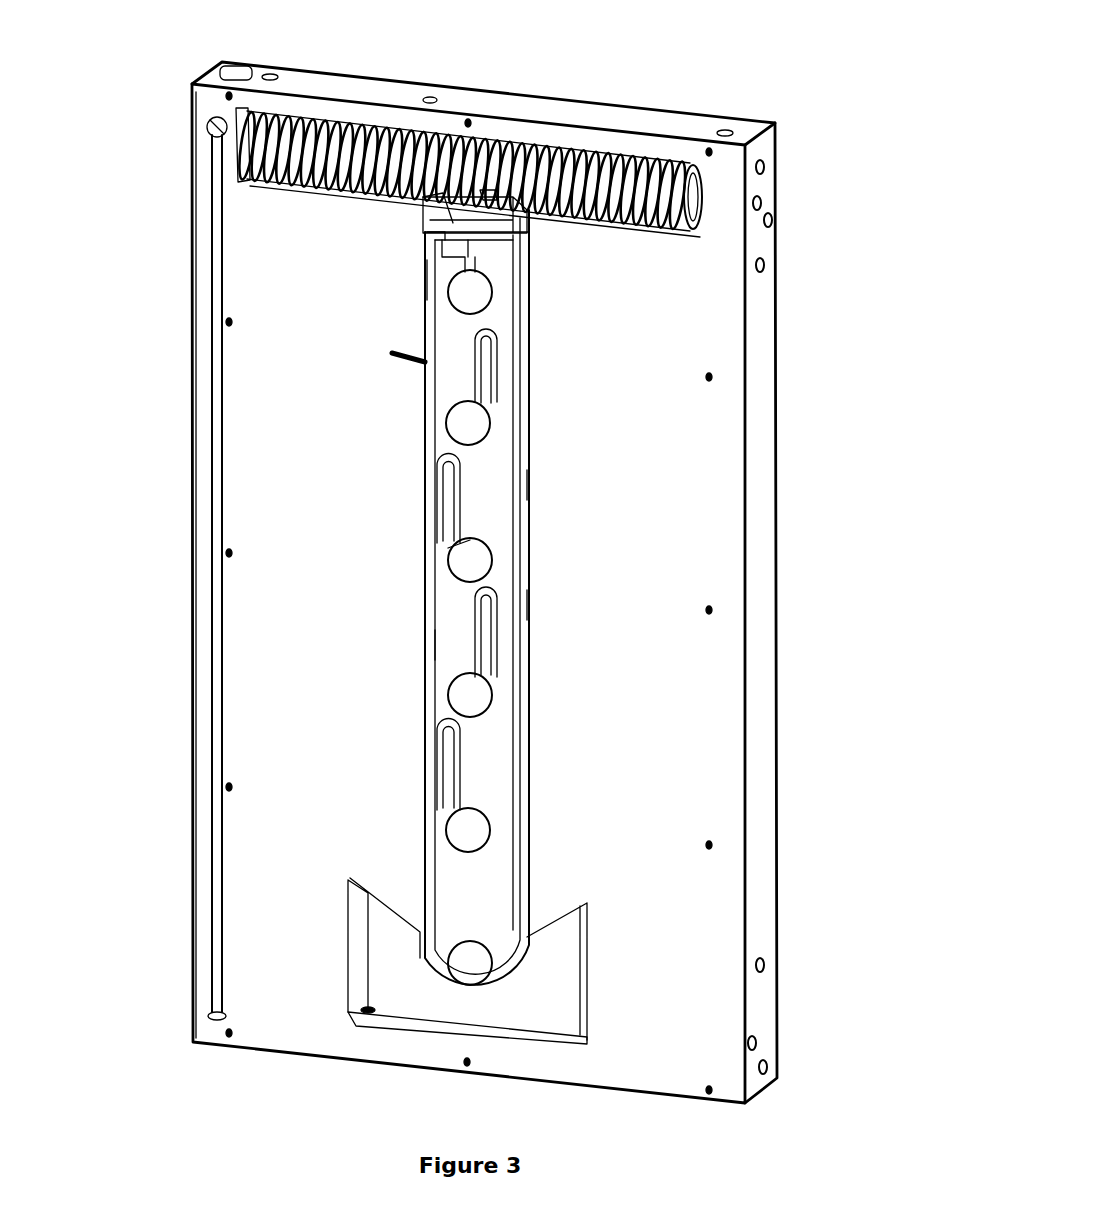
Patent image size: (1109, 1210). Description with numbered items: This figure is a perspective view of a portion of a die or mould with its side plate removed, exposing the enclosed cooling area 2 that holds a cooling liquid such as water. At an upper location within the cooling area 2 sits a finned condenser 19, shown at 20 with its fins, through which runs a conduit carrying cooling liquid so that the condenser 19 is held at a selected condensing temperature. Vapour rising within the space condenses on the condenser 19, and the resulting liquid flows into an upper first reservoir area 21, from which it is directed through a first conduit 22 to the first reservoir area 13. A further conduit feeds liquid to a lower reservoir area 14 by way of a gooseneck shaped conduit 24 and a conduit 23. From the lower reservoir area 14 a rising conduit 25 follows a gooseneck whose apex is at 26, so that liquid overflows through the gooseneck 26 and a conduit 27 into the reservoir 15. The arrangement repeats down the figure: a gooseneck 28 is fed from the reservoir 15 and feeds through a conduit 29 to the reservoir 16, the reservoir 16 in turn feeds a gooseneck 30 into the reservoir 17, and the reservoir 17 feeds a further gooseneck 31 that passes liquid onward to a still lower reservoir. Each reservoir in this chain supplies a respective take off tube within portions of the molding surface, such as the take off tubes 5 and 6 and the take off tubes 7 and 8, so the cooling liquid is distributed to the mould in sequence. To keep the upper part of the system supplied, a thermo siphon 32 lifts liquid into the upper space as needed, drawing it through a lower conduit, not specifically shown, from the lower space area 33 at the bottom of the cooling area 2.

The enclosed cooling area 2 is at (490, 240).
The take off tube 5 is at (226, 1017).
The take off tube 6 is at (453, 975).
The take off tube 7 is at (437, 617).
The take off tube 8 is at (447, 548).
The first reservoir area 13 is at (477, 300).
The lower reservoir area 14 is at (480, 423).
The reservoir 15 is at (470, 560).
The reservoir 16 is at (477, 697).
The reservoir 17 is at (477, 833).
The condenser 19 is at (517, 240).
The coil spring 20 is at (694, 165).
The first reservoir area 21 is at (468, 262).
The first conduit 22 is at (430, 275).
The conduit 23 is at (435, 233).
The gooseneck shaped conduit 24 is at (487, 195).
The rising conduit 25 is at (477, 380).
The gooseneck apex 26 is at (500, 332).
The conduit 27 is at (503, 483).
The gooseneck 28 is at (455, 457).
The conduit 29 is at (440, 640).
The gooseneck 30 is at (513, 600).
The gooseneck 31 is at (440, 727).
The thermo siphon 32 is at (212, 912).
The lower space area 33 is at (578, 987).